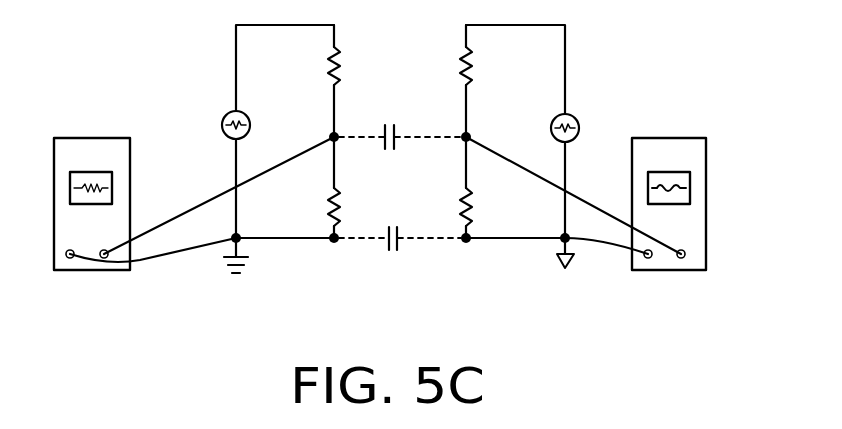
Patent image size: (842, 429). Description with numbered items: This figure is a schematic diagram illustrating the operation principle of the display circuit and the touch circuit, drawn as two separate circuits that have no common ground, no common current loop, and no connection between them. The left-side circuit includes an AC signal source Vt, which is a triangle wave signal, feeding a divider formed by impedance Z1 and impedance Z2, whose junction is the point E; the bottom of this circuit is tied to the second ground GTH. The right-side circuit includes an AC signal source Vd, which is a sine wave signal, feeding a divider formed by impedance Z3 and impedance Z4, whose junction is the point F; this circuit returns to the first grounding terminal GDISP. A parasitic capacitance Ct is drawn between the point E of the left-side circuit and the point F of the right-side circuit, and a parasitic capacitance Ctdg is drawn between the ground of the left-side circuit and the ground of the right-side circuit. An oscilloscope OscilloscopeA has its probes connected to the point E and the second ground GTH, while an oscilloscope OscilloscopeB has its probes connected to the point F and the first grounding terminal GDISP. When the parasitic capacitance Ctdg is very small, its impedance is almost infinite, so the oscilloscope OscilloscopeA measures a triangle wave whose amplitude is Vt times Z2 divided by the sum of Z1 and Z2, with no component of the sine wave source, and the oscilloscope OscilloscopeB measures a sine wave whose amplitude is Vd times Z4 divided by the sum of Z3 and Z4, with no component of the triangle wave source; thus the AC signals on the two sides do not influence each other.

The oscilloscope (A) OscilloscopeA is at (102, 231).
The oscilloscope (B) OscilloscopeB is at (679, 238).
The AC signal source Vt is at (216, 125).
The AC signal source Vd is at (582, 128).
The impedance Z1 is at (349, 68).
The impedance Z2 is at (351, 209).
The impedance Z3 is at (448, 68).
The impedance Z4 is at (448, 209).
The parasitic capacitance Ct is at (400, 120).
The parasitic capacitance Ctdg is at (400, 257).
The point E is at (313, 117).
The point F is at (482, 117).
The second ground GTH is at (238, 281).
The first grounding terminal GDISP is at (555, 283).